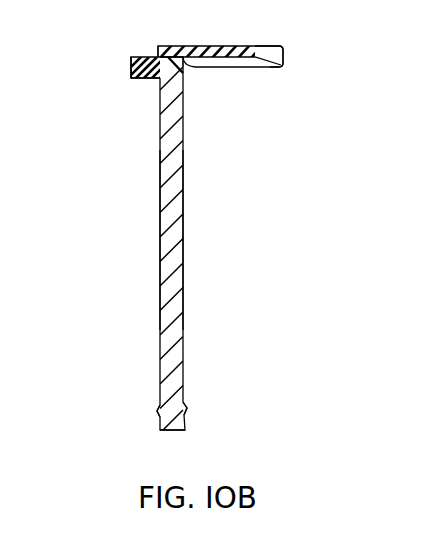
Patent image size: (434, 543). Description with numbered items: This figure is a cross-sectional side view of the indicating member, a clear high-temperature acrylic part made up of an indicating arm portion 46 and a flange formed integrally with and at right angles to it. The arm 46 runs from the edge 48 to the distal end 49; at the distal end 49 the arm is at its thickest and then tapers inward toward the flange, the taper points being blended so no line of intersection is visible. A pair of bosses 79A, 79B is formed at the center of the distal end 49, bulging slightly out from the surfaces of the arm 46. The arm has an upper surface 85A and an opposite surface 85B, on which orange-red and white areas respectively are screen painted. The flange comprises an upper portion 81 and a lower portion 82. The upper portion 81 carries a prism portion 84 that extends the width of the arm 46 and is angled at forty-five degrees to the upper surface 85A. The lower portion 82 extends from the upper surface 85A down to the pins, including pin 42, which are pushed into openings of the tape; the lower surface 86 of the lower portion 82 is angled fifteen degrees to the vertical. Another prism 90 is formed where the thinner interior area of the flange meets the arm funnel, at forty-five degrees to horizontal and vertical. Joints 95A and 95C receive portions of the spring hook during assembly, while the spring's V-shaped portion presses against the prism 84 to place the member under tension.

The pin 42 is at (269, 48).
The indicating arm portion 46 is at (184, 340).
The edge 48 is at (145, 58).
The distal end 49 is at (175, 428).
The boss 79A is at (158, 412).
The boss 79B is at (188, 411).
The upper portion 81 is at (145, 82).
The lower portion 82 is at (200, 46).
The prism portion 84 is at (130, 68).
The upper surface 85A is at (160, 240).
The surface 85B is at (184, 250).
The lower surface 86 is at (271, 67).
The prism 90 is at (184, 67).
The joint 95A is at (157, 55).
The joint 95C is at (183, 73).